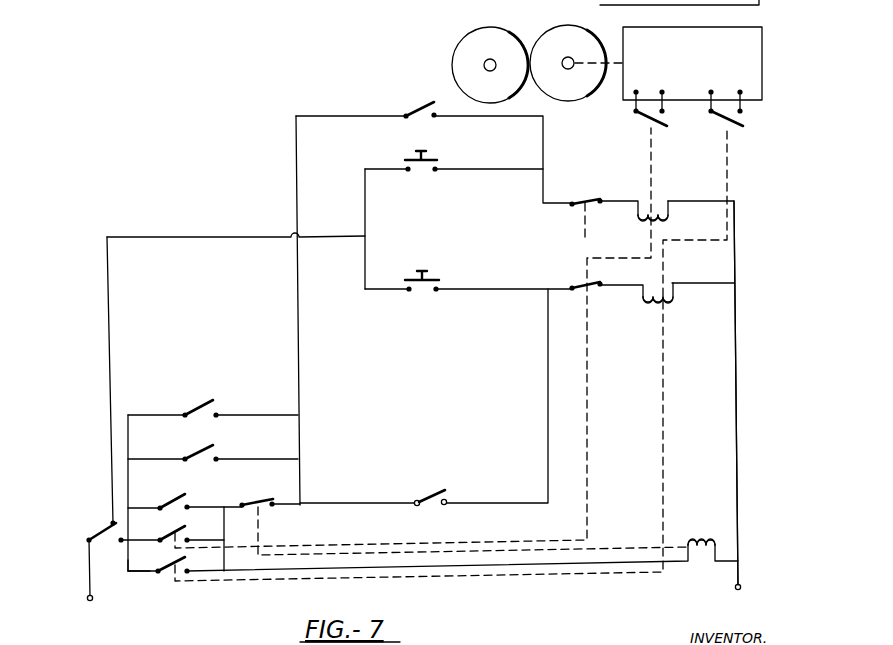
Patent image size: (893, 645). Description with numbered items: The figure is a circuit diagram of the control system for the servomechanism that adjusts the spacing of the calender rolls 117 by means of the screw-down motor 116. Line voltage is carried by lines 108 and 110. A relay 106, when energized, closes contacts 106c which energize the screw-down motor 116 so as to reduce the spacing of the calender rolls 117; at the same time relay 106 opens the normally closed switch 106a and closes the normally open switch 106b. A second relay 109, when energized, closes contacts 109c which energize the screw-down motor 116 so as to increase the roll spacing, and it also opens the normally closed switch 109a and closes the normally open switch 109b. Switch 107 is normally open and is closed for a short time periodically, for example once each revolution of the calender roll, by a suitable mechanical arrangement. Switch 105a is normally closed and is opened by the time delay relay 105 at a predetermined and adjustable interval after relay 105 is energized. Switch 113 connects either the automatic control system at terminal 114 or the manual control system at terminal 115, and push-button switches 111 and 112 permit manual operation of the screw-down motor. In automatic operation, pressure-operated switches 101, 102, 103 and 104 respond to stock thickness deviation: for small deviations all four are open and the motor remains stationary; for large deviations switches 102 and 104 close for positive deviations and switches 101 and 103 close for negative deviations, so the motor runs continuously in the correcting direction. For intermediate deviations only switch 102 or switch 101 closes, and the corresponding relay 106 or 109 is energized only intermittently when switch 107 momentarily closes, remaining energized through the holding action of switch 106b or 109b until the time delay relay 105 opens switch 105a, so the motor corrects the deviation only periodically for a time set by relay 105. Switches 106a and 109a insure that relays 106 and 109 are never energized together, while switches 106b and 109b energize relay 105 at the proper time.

The pressure-operated switch 101 is at (432, 104).
The pressure-operated switch 102 is at (428, 496).
The pressure-operated switch 103 is at (198, 405).
The pressure-operated switch 104 is at (204, 450).
The time delay relay 105 is at (700, 544).
The normally closed switch 105a is at (255, 500).
The relay 106 is at (672, 300).
The normally closed switch 106a is at (580, 200).
The normally open switch 106b is at (176, 578).
The contacts 106c is at (725, 122).
The switch 107 is at (182, 496).
The line 108 is at (88, 560).
The relay 109 is at (656, 201).
The normally closed switch 109a is at (590, 292).
The normally open switch 109b is at (191, 528).
The contacts 109c is at (645, 122).
The line 110 is at (736, 313).
The push-button switch 111 is at (417, 150).
The push-button switch 112 is at (429, 270).
The switch 113 is at (119, 542).
The terminal 114 is at (123, 575).
The terminal 115 is at (110, 521).
The screw-down motor 116 is at (758, 72).
The calender rolls 117 is at (546, 43).